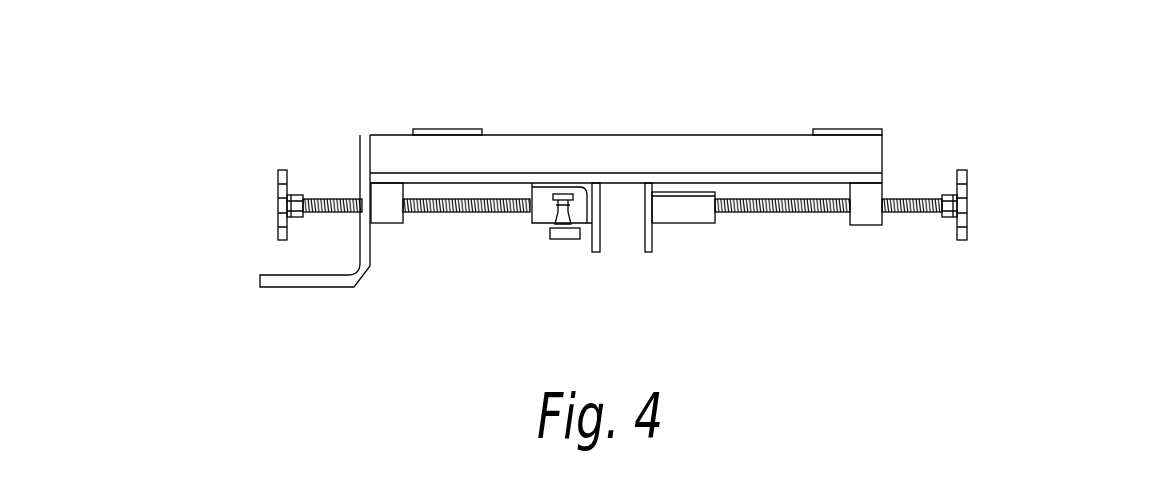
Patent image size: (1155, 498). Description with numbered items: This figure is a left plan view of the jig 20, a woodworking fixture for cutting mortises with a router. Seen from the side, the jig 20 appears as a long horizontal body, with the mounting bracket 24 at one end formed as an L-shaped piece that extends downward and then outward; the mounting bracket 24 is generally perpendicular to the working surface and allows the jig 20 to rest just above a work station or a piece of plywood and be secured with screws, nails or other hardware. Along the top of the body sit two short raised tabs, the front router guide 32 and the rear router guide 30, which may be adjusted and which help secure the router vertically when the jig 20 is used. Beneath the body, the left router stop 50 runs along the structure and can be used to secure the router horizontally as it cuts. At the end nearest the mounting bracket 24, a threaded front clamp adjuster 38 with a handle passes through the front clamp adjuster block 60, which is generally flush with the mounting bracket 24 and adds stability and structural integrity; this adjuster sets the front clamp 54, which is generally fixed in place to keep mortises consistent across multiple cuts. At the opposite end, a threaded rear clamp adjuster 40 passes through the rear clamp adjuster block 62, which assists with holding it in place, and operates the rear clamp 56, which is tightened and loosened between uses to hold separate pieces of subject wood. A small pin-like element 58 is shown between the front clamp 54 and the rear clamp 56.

The jig 20 is at (984, 107).
The mounting bracket 24 is at (330, 288).
The rear router guide 30 is at (840, 130).
The front router guide 32 is at (458, 130).
The front clamp adjuster 38 is at (278, 203).
The rear clamp adjuster 40 is at (967, 202).
The left router stop 50 is at (613, 148).
The front clamp 54 is at (600, 226).
The rear clamp 56 is at (677, 215).
The pin 58 is at (567, 240).
The front clamp adjuster block 60 is at (407, 220).
The rear clamp adjuster block 62 is at (860, 213).